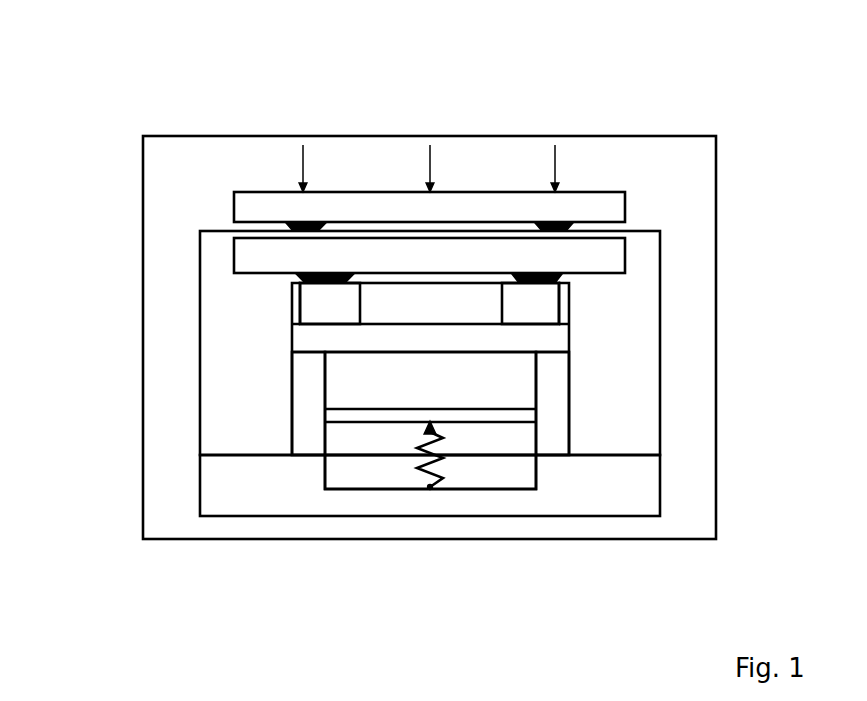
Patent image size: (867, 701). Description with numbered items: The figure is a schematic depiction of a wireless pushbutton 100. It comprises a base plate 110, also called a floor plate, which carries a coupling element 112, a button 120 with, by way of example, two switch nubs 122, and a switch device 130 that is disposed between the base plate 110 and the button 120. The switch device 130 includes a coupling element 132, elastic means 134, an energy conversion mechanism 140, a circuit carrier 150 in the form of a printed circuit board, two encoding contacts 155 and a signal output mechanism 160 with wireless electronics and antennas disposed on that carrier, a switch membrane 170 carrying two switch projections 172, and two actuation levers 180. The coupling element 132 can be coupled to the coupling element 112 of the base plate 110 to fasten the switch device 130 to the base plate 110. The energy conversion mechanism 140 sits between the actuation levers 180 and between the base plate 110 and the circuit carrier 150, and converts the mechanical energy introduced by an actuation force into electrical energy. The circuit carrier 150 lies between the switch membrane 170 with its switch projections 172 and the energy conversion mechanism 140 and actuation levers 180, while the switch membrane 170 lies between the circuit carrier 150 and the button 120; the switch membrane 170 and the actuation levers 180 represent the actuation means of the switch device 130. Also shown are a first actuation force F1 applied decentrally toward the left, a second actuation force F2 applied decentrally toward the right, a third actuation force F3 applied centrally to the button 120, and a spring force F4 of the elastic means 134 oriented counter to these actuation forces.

The wireless pushbutton 100 is at (117, 117).
The base plate 110 is at (224, 497).
The coupling element 112 is at (377, 475).
The button 120 is at (249, 203).
The switch nubs 122 is at (293, 220).
The switch device 130 is at (231, 437).
The coupling element 132 is at (341, 443).
The elastic means 134 is at (425, 485).
The energy conversion mechanism 140 is at (500, 398).
The circuit carrier 150 is at (322, 336).
The encoding contacts 155 is at (317, 297).
The signal output mechanism 160 is at (373, 308).
The switch membrane 170 is at (400, 255).
The switch projections 172 is at (335, 277).
The actuation levers 180 is at (303, 382).
The first actuation force F1 is at (303, 145).
The second actuation force F2 is at (555, 145).
The third actuation force F3 is at (430, 145).
The spring force F4 is at (437, 433).